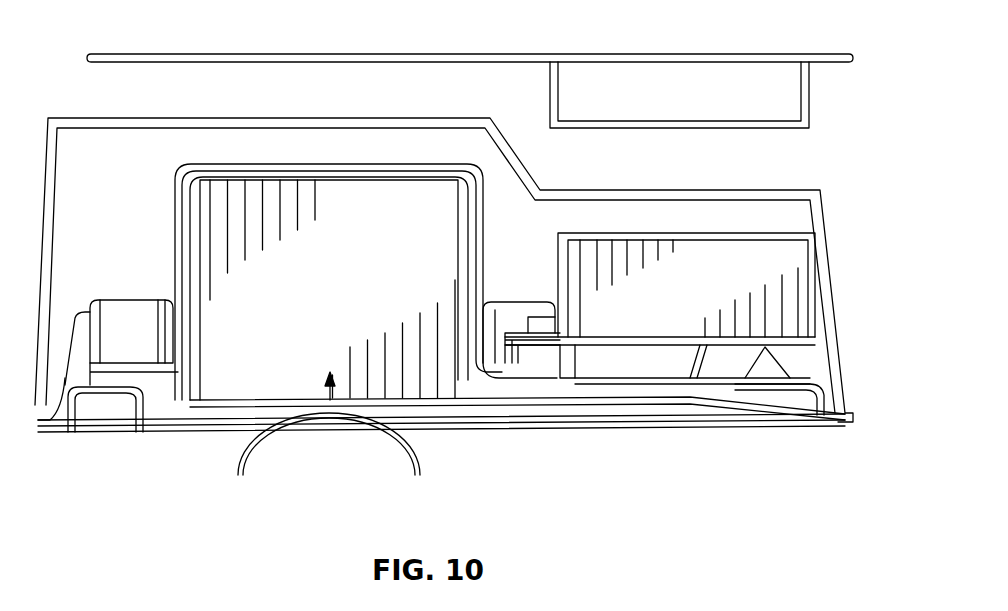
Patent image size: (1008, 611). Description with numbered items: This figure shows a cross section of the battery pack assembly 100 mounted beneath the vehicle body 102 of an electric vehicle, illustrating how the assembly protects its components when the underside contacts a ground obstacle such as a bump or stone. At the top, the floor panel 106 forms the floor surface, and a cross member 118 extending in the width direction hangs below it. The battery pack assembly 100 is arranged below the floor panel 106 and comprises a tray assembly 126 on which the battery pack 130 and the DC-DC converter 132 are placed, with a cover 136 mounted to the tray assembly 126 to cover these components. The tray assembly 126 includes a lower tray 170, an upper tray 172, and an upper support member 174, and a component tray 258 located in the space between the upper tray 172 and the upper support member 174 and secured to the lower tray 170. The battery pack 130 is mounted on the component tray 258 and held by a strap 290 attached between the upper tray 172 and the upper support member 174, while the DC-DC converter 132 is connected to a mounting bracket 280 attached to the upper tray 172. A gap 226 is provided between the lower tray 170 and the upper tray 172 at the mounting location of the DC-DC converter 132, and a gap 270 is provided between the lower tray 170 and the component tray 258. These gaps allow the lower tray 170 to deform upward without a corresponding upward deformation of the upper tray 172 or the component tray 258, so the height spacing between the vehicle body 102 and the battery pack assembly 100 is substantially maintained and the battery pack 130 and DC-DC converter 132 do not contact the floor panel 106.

The battery pack assembly 100 is at (632, 466).
The vehicle body 102 is at (508, 30).
The floor panel 106 is at (322, 53).
The cross member 118 is at (678, 121).
The tray assembly 126 is at (677, 440).
The battery pack 130 is at (215, 420).
The DC-DC converter 132 is at (800, 265).
The cover 136 is at (322, 118).
The lower tray 170 is at (560, 435).
The upper tray 172 is at (695, 420).
The upper support member 174 is at (128, 314).
The gap 226 is at (620, 400).
The component tray 258 is at (470, 425).
The gap 270 is at (232, 412).
The mounting bracket 280 is at (748, 412).
The strap 290 is at (188, 177).